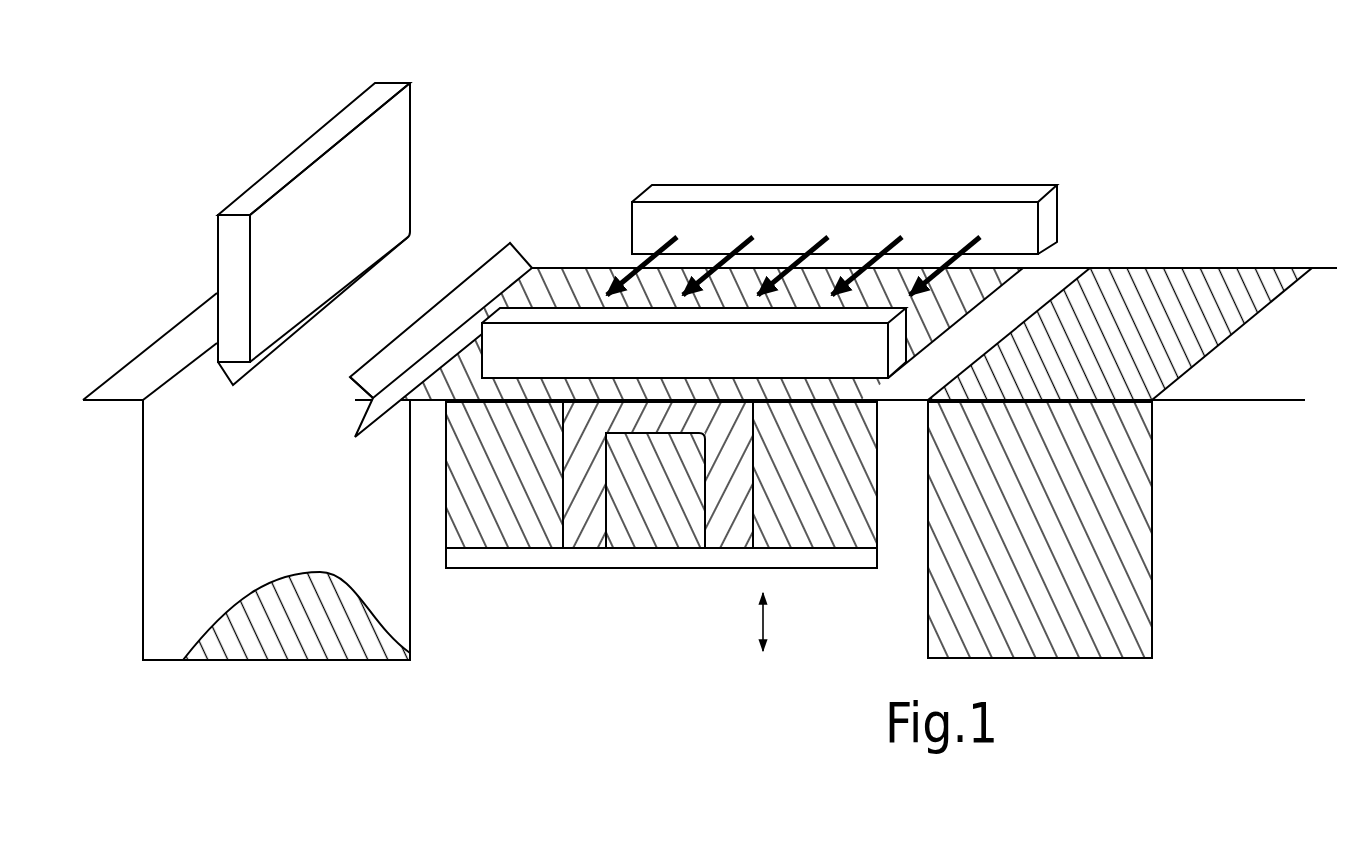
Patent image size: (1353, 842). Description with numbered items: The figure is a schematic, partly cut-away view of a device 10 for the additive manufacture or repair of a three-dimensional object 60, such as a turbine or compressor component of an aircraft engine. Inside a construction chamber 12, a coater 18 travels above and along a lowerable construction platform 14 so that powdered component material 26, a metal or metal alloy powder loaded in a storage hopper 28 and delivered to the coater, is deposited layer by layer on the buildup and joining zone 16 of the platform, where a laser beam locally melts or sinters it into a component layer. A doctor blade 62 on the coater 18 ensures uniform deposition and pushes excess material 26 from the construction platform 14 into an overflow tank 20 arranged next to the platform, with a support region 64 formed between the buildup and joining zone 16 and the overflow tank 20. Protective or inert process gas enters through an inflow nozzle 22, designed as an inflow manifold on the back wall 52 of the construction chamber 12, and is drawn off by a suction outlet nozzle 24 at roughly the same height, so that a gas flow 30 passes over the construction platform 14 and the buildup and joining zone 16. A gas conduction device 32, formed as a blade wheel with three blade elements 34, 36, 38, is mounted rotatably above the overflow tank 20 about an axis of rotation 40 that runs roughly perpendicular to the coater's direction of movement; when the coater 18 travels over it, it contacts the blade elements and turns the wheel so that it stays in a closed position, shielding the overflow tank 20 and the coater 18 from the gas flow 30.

The device 10 is at (1202, 153).
The construction chamber 12 is at (841, 165).
The construction platform 14 is at (805, 556).
The buildup and joining zone 16 is at (880, 293).
The coater 18 is at (400, 156).
The overflow tank 20 is at (143, 520).
The inflow nozzle 22 is at (993, 193).
The suction outlet nozzle 24 is at (847, 357).
The component material 26 is at (283, 640).
The storage hopper 28 is at (1152, 497).
The gas flow 30 is at (787, 262).
The gas conduction device 32 is at (537, 136).
The blade element 34 is at (540, 270).
The blade element 36 is at (385, 356).
The blade element 38 is at (365, 430).
The axis of rotation 40 is at (355, 400).
The back wall 52 is at (1105, 232).
The three-dimensional object 60 is at (587, 535).
The doctor blade 62 is at (232, 372).
The support region 64 is at (437, 397).